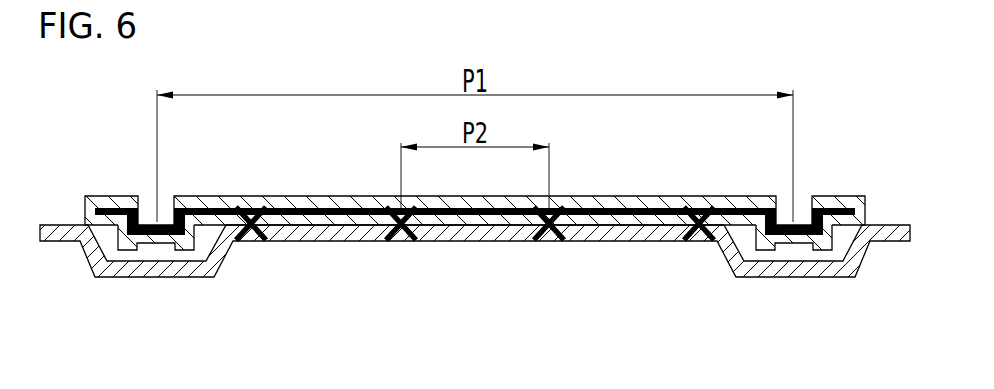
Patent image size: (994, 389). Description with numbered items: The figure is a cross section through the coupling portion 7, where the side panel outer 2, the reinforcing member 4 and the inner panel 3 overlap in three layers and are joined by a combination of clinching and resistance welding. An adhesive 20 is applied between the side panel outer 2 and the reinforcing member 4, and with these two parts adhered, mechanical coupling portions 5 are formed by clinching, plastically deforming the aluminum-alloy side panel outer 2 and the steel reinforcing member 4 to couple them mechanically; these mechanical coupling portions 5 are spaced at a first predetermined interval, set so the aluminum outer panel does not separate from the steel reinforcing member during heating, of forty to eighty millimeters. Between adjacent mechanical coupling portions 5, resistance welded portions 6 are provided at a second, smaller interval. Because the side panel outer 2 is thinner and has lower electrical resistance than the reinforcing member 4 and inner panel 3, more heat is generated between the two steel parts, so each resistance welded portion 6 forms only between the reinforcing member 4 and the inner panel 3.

The side panel outer 2 is at (285, 202).
The inner panel 3 is at (197, 277).
The reinforcing member 4 is at (338, 208).
The mechanical coupling portion 5 is at (157, 250).
The resistance welded portion 6 is at (253, 240).
The coupling portion 7 is at (628, 302).
The adhesive 20 is at (638, 207).